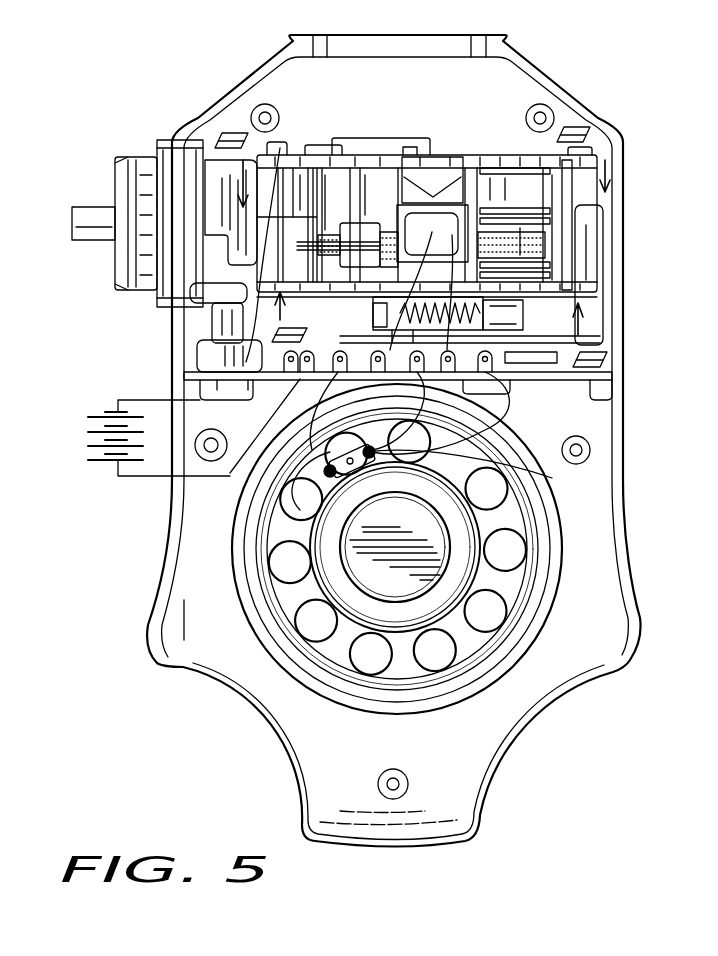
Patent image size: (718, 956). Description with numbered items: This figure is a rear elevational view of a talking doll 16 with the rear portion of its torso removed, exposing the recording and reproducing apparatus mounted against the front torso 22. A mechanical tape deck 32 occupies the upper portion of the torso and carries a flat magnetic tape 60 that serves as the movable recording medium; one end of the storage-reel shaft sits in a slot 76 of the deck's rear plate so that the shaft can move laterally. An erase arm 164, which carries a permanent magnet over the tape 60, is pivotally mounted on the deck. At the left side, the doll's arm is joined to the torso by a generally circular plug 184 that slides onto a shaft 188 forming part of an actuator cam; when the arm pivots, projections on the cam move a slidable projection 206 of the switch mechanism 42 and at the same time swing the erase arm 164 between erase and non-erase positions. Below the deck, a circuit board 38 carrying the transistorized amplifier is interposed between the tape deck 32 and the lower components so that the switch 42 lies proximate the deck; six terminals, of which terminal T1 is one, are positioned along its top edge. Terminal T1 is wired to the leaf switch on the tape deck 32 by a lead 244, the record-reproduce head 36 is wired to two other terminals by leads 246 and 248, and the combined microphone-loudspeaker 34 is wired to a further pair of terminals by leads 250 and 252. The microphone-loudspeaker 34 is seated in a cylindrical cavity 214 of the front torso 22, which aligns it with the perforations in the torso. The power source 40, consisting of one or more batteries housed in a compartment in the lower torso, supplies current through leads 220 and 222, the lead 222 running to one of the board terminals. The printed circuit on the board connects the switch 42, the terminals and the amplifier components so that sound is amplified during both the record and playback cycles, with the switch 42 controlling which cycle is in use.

The front torso 22 is at (160, 557).
The telephone 16 is at (92, 632).
The tape deck 32 is at (396, 124).
The combined microphone-loudspeaker 34 is at (283, 600).
The combined record-reproduce head 36 is at (432, 232).
The circuit board 38 is at (607, 400).
The power source 40 is at (105, 412).
The switch mechanism 42 is at (212, 357).
The magnetic tape 60 is at (533, 247).
The slot 76 is at (462, 392).
The erase arm 164 is at (218, 187).
The plug 184 is at (143, 157).
The shaft 188 is at (93, 215).
The slidable projection 206 is at (220, 320).
The cylindrical cavity 214 is at (370, 708).
The lead 220 is at (146, 398).
The lead 222 is at (115, 466).
The lead 244 is at (607, 312).
The lead 246 is at (395, 314).
The lead 248 is at (506, 298).
The lead 250 is at (552, 478).
The lead 252 is at (505, 397).
The terminal T1 is at (310, 355).